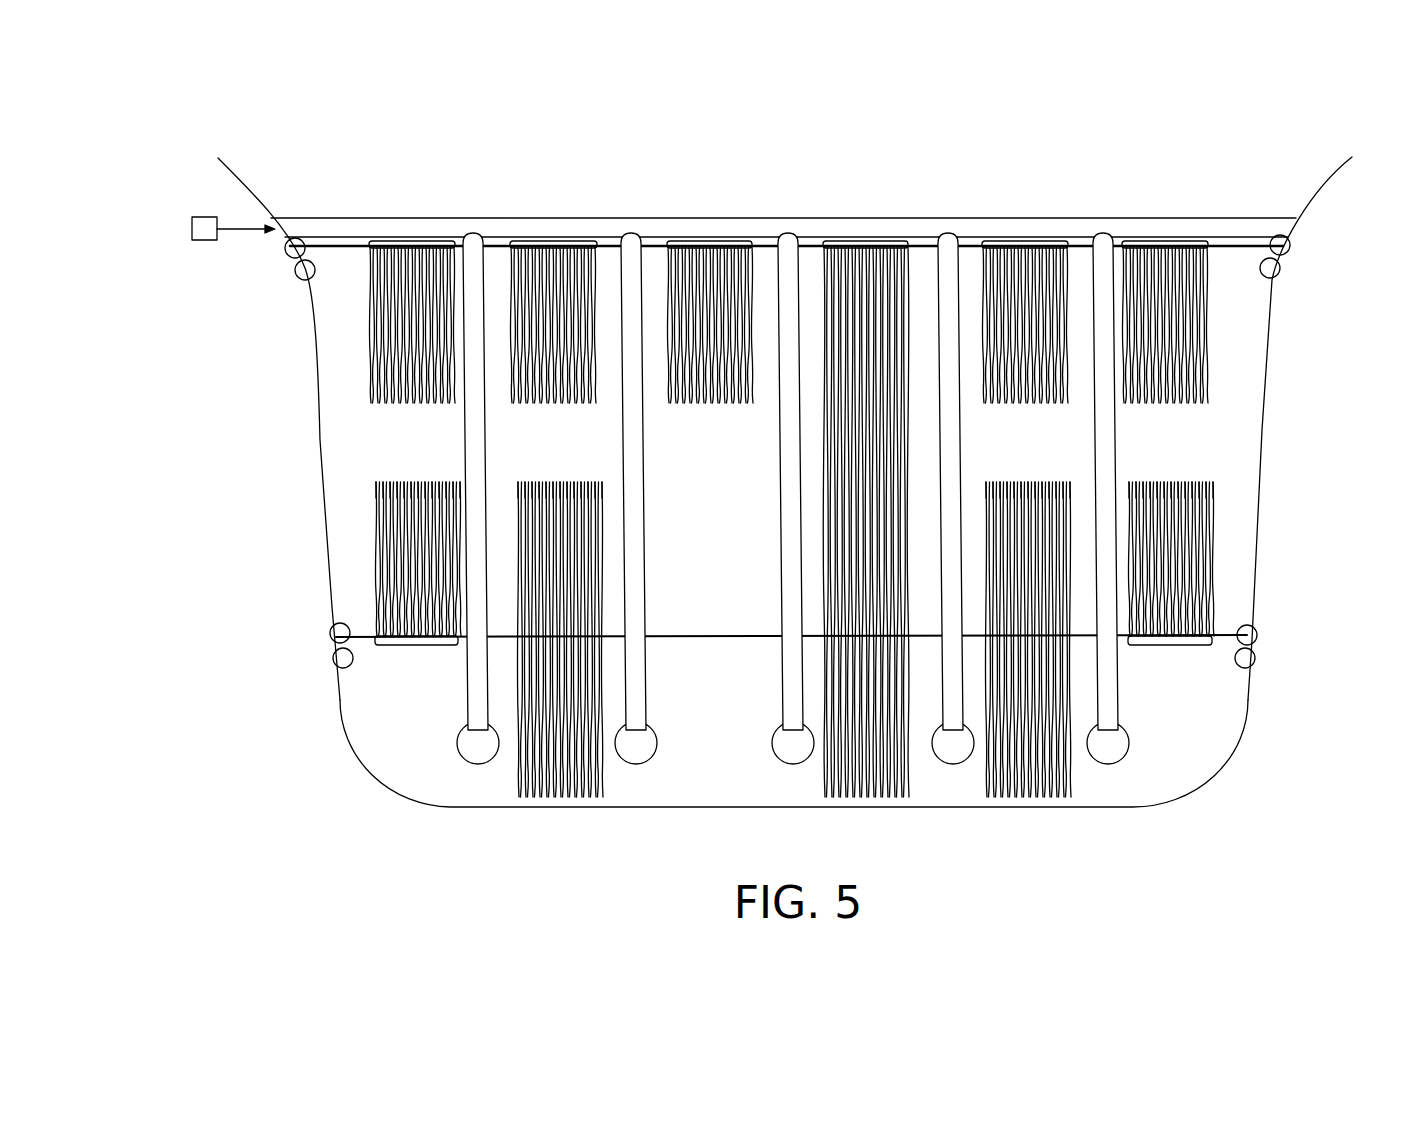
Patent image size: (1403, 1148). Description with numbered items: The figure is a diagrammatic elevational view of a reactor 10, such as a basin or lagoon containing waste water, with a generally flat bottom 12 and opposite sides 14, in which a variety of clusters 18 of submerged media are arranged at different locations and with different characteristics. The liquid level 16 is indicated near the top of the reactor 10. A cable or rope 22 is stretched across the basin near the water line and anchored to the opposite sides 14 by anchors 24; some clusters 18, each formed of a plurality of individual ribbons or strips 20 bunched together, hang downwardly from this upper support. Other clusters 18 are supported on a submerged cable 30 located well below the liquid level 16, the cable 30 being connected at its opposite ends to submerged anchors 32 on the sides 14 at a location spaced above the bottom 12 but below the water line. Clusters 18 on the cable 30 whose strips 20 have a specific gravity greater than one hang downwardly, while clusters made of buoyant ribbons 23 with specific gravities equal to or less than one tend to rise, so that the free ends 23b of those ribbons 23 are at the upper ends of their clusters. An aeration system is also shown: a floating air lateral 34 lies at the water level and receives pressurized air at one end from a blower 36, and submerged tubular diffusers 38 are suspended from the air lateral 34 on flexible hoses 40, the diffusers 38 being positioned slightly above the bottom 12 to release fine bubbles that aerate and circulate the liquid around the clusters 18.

The reactor 10 is at (801, 510).
The bottom 12 is at (960, 810).
The sides 14 is at (1263, 448).
The liquid level 16 is at (344, 237).
The cluster 18 is at (789, 512).
The ribbons or strips 20 is at (414, 247).
The cable or rope 22 is at (332, 250).
The ribbons 23 is at (591, 520).
The free ends 23b is at (528, 482).
The anchors 24 is at (300, 267).
The cable 30 is at (765, 635).
The submerged anchors 32 is at (330, 638).
The floating air lateral 34 is at (657, 220).
The blower 36 is at (203, 217).
The tubular diffusers 38 is at (462, 746).
The flexible hoses 40 is at (954, 416).